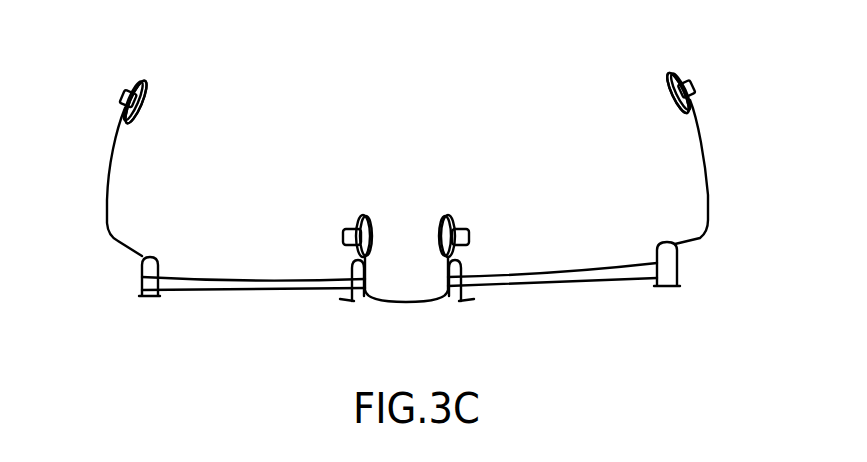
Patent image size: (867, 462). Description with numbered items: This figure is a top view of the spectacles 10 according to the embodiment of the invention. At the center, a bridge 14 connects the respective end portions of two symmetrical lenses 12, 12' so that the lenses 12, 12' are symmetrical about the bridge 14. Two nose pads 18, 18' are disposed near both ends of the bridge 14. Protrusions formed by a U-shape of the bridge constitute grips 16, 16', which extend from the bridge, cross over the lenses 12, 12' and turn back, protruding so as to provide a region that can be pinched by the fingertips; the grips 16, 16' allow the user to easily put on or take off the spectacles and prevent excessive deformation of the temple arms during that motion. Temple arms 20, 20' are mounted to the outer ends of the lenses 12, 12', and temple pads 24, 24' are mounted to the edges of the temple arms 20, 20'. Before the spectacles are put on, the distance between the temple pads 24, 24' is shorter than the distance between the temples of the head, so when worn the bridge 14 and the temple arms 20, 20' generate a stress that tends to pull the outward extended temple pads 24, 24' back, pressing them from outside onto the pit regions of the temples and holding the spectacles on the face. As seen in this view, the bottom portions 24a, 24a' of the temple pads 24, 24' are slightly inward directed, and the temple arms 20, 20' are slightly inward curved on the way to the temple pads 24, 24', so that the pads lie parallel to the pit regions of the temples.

The spectacles 10 is at (404, 154).
The lens 12 is at (252, 252).
The lens 12' is at (564, 244).
The bridge 14 is at (407, 303).
The grip 16 is at (322, 303).
The grip 16' is at (490, 303).
The nose pad 18 is at (363, 200).
The nose pad 18' is at (453, 199).
The temple arm 20 is at (103, 182).
The temple arm 20' is at (724, 172).
The temple pad 24 is at (152, 82).
The temple pad 24' is at (708, 71).
The bottom portion of temple pad 24a is at (176, 121).
The bottom portion of temple pad 24a' is at (636, 108).